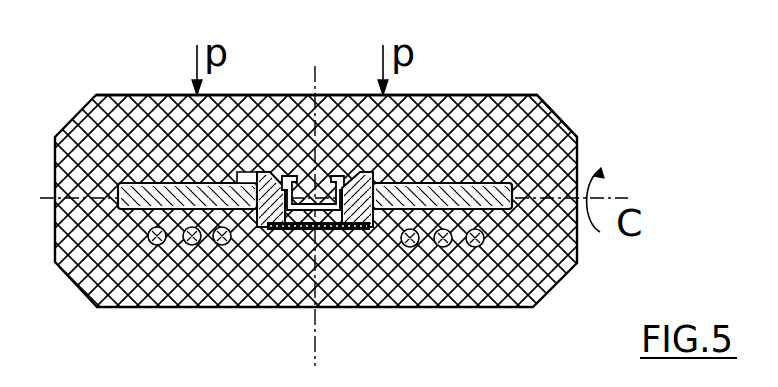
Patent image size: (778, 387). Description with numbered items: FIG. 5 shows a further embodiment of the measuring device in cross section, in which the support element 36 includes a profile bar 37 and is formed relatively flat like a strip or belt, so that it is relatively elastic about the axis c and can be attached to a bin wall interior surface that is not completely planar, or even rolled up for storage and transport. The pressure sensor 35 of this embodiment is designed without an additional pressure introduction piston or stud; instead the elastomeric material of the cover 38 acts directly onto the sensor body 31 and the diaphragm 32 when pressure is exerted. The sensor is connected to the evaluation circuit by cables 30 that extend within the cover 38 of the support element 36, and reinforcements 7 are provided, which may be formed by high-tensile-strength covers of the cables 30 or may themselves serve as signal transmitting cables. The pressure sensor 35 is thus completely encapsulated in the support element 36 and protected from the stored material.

The support element 36 is at (566, 109).
The cover 38 is at (450, 127).
The pressure sensor 35 is at (248, 157).
The profile bar 37 is at (512, 190).
The sensor body 31 is at (296, 184).
The diaphragm 32 is at (346, 232).
The reinforcements 7 is at (312, 231).
The cables 30 is at (186, 250).